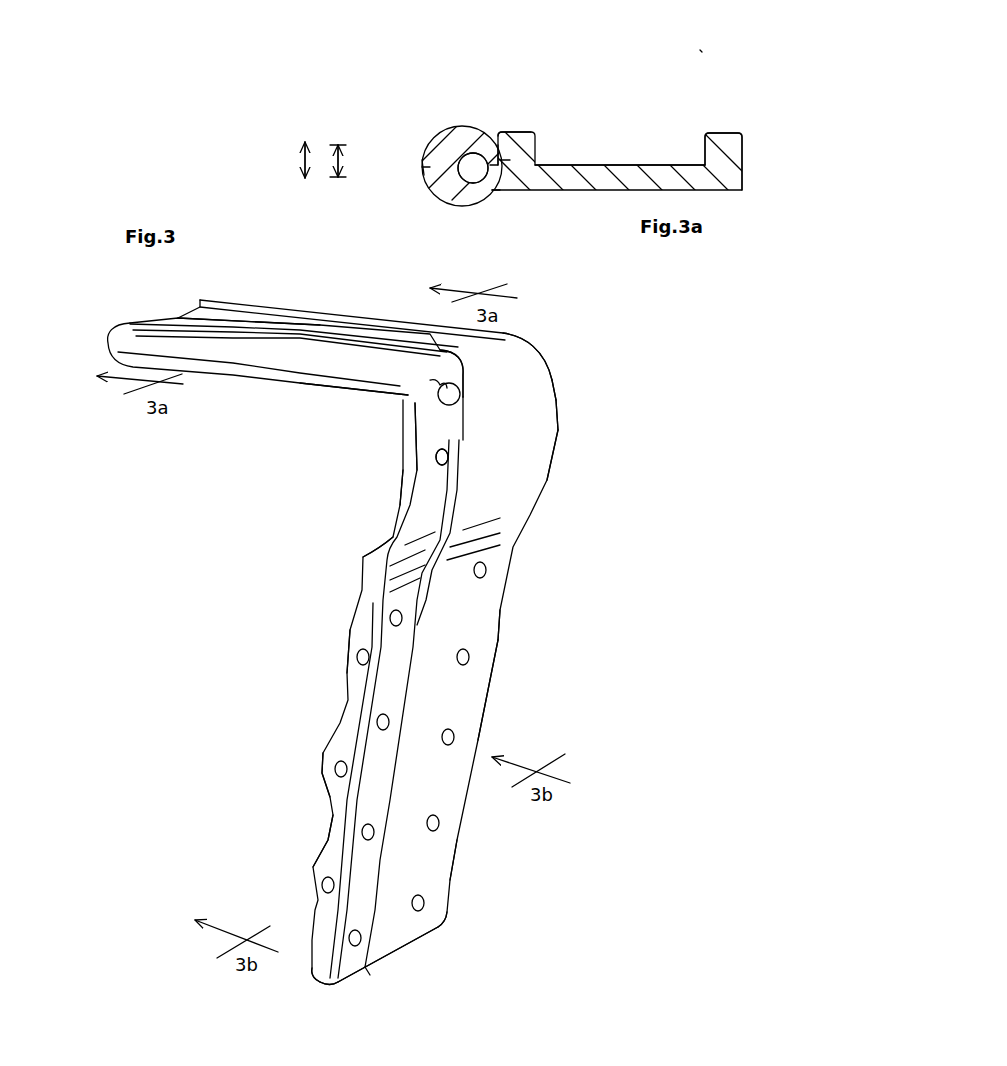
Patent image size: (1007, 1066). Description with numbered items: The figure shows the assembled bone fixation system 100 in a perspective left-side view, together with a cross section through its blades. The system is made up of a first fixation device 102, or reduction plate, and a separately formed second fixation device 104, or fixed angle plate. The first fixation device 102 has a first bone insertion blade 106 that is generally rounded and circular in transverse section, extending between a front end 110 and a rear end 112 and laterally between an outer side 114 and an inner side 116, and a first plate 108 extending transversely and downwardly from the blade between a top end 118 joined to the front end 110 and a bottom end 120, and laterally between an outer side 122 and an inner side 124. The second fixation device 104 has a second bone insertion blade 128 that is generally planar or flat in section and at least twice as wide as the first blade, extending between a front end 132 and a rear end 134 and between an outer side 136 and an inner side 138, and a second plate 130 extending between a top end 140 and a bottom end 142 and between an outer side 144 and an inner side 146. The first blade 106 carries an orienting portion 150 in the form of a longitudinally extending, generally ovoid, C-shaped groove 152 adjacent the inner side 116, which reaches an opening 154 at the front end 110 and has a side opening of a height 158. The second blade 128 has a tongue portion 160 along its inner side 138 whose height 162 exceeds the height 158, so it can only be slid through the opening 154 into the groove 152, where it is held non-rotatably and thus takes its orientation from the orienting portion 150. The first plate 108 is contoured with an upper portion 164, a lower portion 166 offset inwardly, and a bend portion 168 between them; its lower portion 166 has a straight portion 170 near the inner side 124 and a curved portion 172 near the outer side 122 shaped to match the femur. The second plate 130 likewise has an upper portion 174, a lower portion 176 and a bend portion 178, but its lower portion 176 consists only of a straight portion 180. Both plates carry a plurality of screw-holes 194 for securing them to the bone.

In FIG. 3, the bone fixation system 100 is at (588, 882).
In FIG. 3A, the bone fixation system 100 is at (703, 50).
In FIG. 3A, the first fixation device 102 is at (388, 125).
In FIG. 3, the second fixation device 104 is at (530, 637).
In FIG. 3A, the second fixation device 104 is at (797, 155).
In FIG. 3, the first bone insertion blade 106 is at (265, 365).
In FIG. 3A, the first bone insertion blade 106 is at (462, 202).
In FIG. 3, the first plate 108 is at (370, 597).
In FIG. 3, the front end 110 is at (413, 387).
In FIG. 3, the rear end 112 is at (100, 337).
In FIG. 3, the outer side 114 is at (323, 375).
In FIG. 3A, the outer side 114 is at (418, 166).
In FIG. 3A, the inner side 116 is at (497, 128).
In FIG. 3, the top end 118 is at (427, 405).
In FIG. 3, the bottom end 120 is at (332, 992).
In FIG. 3, the outer side 122 is at (330, 850).
In FIG. 3, the inner side 124 is at (397, 762).
In FIG. 3, the second bone insertion blade 128 is at (360, 315).
In FIG. 3A, the second bone insertion blade 128 is at (590, 195).
In FIG. 3, the second plate 130 is at (440, 872).
In FIG. 3, the front end 132 is at (498, 362).
In FIG. 3, the rear end 134 is at (188, 312).
In FIG. 3, the outer side 136 is at (313, 305).
In FIG. 3A, the outer side 136 is at (746, 163).
In FIG. 3A, the inner side 138 is at (510, 130).
In FIG. 3, the top end 140 is at (498, 380).
In FIG. 3, the bottom end 142 is at (410, 945).
In FIG. 3, the outer side 144 is at (493, 680).
In FIG. 3, the inner side 146 is at (412, 708).
In FIG. 3, the orienting portion 150 is at (442, 465).
In FIG. 3A, the orienting portion 150 is at (482, 185).
In FIG. 3, the groove 152 is at (442, 457).
In FIG. 3A, the groove 152 is at (473, 168).
In FIG. 3, the opening 154 is at (429, 375).
In FIG. 3A, the height 158 is at (340, 160).
In FIG. 3, the tongue portion 160 is at (461, 393).
In FIG. 3A, the tongue portion 160 is at (490, 160).
In FIG. 3, the height 162 is at (268, 733).
In FIG. 3A, the height 162 is at (305, 160).
In FIG. 3, the upper portion 164 is at (402, 497).
In FIG. 3, the lower portion 166 is at (333, 805).
In FIG. 3, the bend portion 168 is at (385, 555).
In FIG. 3, the straight portion 170 is at (353, 963).
In FIG. 3, the curved portion 172 is at (320, 963).
In FIG. 3, the upper portion 174 is at (530, 427).
In FIG. 3, the lower portion 176 is at (440, 837).
In FIG. 3, the bend portion 178 is at (513, 515).
In FIG. 3, the straight portion 180 is at (428, 920).
In FIG. 3, the screw-holes 194 is at (360, 658).